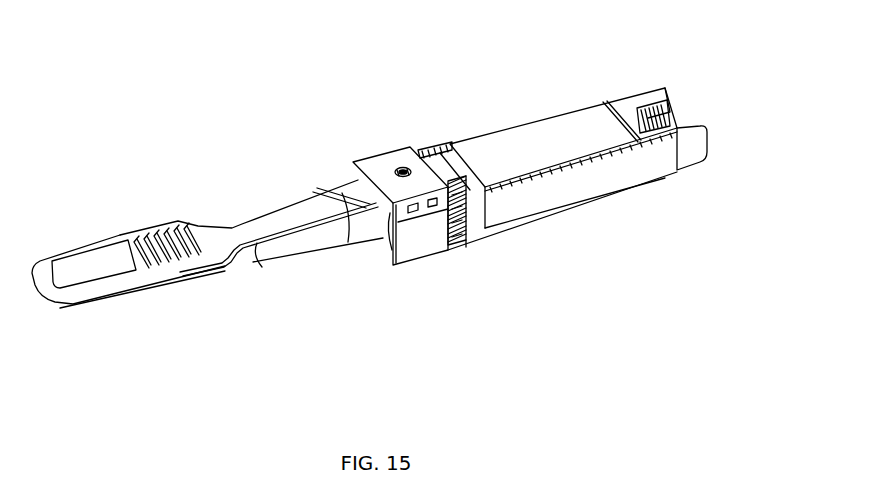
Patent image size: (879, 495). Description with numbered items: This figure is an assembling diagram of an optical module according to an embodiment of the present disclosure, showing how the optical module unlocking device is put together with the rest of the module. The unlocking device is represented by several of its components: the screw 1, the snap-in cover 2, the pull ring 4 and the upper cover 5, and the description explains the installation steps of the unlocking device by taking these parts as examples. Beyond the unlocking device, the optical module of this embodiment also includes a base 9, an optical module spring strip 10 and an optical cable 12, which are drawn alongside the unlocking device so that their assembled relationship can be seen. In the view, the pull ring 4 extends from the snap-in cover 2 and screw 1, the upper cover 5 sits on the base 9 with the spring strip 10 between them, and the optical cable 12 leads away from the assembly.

The screw 1 is at (405, 168).
The snap-in cover 2 is at (385, 167).
The pull ring 4 is at (234, 228).
The upper cover 5 is at (537, 149).
The base 9 is at (554, 191).
The optical module spring strip 10 is at (464, 234).
The optical cable 12 is at (274, 253).